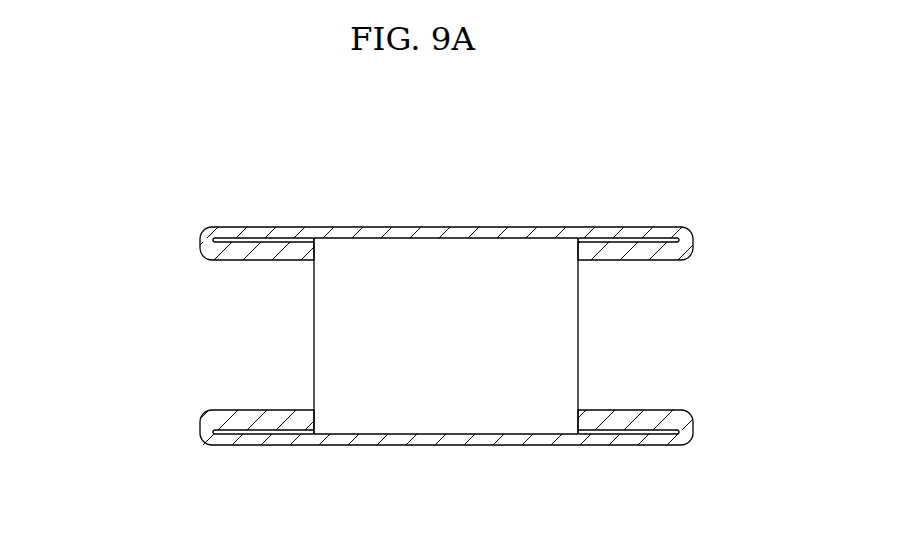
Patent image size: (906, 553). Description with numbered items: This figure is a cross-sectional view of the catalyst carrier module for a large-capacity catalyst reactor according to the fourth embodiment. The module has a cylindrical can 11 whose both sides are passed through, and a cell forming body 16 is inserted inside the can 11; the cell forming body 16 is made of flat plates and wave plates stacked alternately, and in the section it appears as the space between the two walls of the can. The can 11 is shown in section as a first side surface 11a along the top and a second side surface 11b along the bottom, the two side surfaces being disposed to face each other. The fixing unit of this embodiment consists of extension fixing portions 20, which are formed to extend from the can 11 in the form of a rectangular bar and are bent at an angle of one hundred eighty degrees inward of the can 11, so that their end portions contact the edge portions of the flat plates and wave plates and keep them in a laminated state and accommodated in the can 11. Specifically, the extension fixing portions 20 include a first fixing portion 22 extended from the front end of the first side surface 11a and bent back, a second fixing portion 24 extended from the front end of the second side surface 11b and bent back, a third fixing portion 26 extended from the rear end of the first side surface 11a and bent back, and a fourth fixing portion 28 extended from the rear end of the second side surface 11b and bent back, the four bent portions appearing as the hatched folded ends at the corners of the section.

The can 11 is at (572, 178).
The first side surface 11a is at (390, 229).
The second side surface 11b is at (427, 445).
The cell forming body 16 is at (555, 342).
The extension fixing portions 20 is at (453, 335).
The first fixing portion 22 is at (262, 260).
The second fixing portion 24 is at (256, 414).
The third fixing portion 26 is at (643, 258).
The fourth fixing portion 28 is at (650, 415).